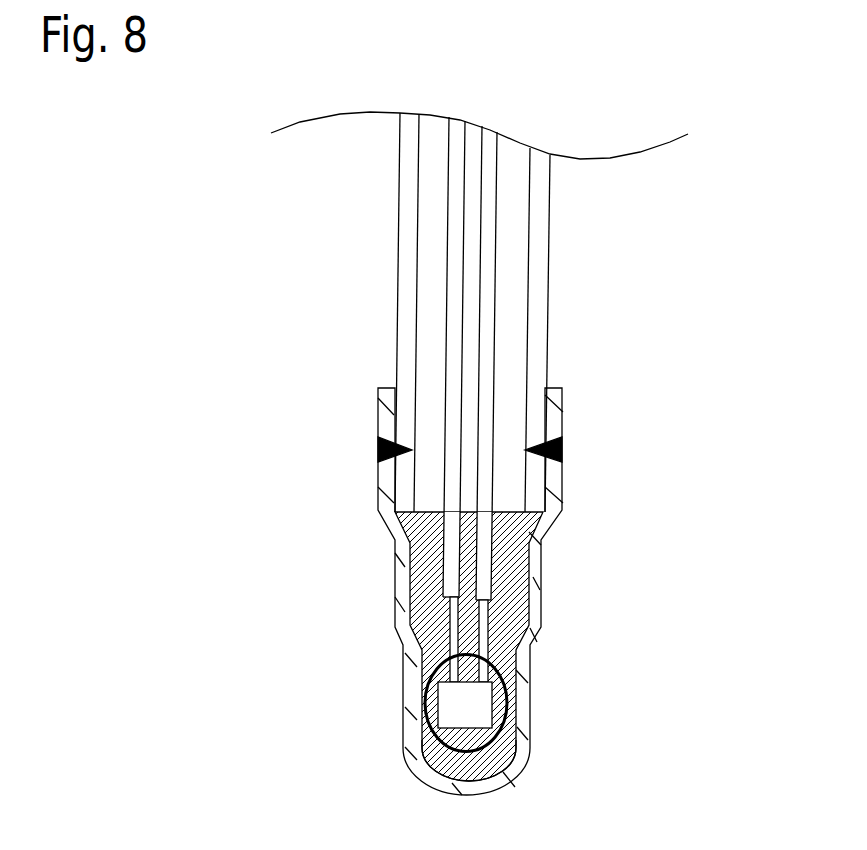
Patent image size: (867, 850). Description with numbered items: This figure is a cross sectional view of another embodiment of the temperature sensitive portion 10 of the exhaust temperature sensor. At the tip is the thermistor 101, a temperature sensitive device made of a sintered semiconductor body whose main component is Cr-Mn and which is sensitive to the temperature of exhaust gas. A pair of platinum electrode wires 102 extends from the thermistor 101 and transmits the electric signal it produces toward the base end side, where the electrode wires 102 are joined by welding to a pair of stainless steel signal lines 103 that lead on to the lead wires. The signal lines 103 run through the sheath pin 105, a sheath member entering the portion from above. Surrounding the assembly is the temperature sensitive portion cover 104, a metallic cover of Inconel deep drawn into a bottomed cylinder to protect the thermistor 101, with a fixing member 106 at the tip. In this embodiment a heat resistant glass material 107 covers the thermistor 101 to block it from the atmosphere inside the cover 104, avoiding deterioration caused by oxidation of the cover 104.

The temperature sensitive portion 10 is at (312, 446).
The thermistor 101 is at (473, 703).
The electrode wire 102 is at (482, 635).
The signal lines 103 is at (450, 543).
The temperature sensitive portion cover 104 is at (537, 620).
The sheath pin 105 is at (537, 350).
The fixing member 106 is at (485, 765).
The glass material 107 is at (492, 737).